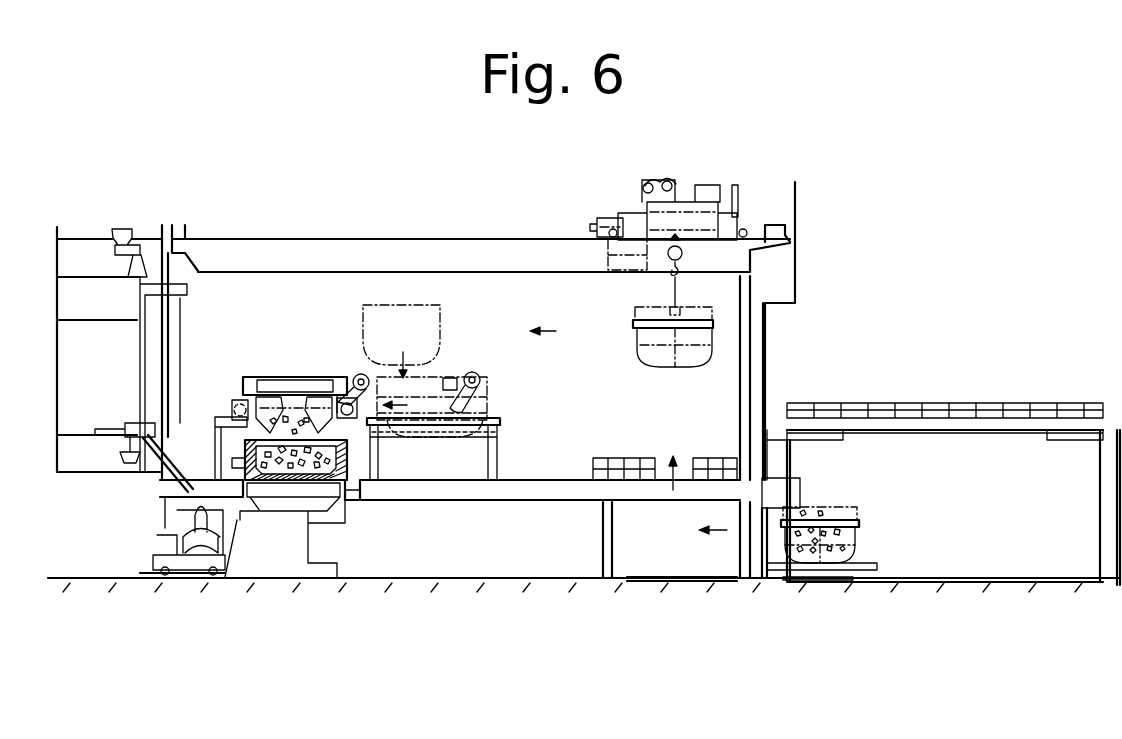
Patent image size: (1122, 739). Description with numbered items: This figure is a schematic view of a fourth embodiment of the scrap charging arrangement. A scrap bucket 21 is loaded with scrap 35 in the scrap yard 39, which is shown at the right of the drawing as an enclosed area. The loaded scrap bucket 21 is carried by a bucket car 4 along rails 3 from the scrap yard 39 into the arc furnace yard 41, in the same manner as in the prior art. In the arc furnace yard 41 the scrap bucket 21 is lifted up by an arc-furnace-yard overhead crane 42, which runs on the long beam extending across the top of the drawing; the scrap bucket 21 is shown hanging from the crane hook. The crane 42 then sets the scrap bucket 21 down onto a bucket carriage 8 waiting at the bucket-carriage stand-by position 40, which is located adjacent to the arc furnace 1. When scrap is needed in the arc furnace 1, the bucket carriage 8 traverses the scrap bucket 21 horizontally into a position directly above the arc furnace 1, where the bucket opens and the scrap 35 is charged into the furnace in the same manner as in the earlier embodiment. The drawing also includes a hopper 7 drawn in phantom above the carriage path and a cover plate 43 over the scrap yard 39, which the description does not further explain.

The arc furnace 1 is at (241, 449).
The rails 3 is at (657, 567).
The bucket car 4 is at (870, 573).
The hopper 7 is at (418, 306).
The bucket carriage 8 is at (488, 393).
The scrap bucket 21 is at (297, 377).
The scrap 35 is at (223, 415).
The scrap yard 39 is at (937, 443).
The bucket-carriage stand-by position 40 is at (505, 422).
The arc furnace yard 41 is at (642, 530).
The arc-furnace-yard overhead crane 42 is at (385, 247).
The cover plate 43 is at (1005, 431).